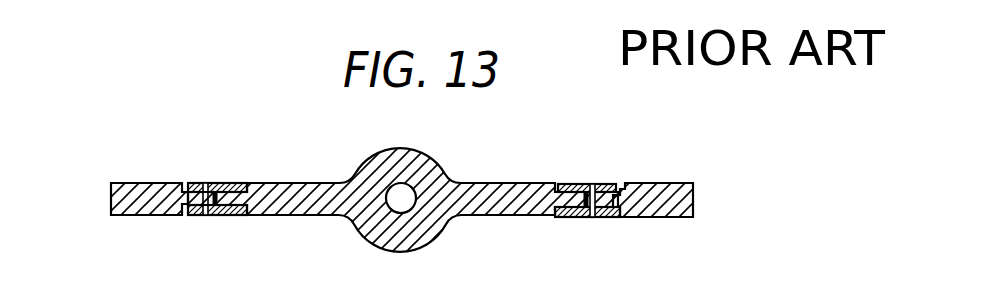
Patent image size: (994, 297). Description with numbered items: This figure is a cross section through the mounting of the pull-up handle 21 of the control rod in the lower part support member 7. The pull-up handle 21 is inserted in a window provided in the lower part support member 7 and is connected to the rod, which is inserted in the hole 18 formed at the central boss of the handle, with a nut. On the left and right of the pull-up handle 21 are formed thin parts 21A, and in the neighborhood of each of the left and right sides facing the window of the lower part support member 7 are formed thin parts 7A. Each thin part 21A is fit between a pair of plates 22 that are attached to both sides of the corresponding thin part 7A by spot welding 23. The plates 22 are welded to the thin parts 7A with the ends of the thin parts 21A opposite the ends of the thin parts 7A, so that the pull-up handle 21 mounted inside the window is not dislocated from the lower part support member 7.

The lower part support member 7 is at (693, 183).
The thin parts of the lower part support member 7A is at (602, 219).
The hole 18 is at (403, 205).
The pull-up handle 21 is at (436, 161).
The thin parts of the pull-up handle 21A is at (573, 219).
The plates 22 is at (580, 185).
The spot welding 23 is at (597, 186).